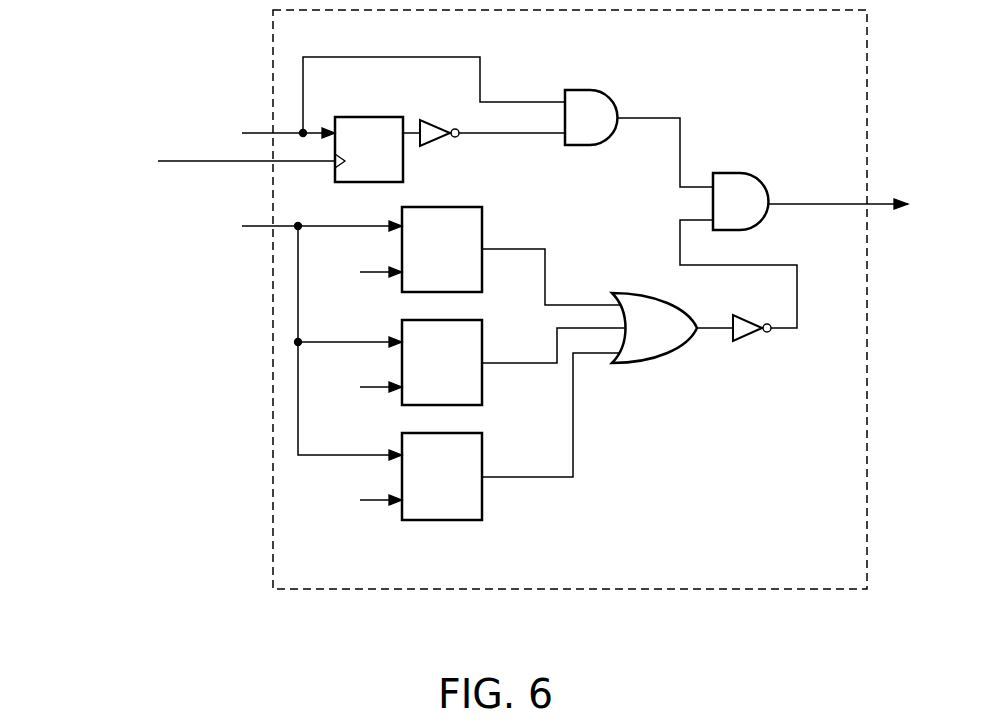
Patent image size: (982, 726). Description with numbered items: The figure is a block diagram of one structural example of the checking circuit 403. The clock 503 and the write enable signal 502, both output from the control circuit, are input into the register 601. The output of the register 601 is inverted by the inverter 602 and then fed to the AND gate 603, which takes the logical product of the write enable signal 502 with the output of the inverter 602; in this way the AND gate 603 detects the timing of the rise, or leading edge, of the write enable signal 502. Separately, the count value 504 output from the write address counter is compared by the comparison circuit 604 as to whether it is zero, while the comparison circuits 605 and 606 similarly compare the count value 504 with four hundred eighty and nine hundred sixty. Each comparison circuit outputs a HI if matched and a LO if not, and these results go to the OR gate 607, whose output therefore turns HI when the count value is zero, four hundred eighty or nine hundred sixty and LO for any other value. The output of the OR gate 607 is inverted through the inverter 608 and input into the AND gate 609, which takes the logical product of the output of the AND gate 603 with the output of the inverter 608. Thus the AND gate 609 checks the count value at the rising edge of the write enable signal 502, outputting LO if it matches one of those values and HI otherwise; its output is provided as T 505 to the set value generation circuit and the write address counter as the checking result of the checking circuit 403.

The checking circuit 403 is at (570, 299).
The write enable signal 502 is at (298, 101).
The clock 503 is at (183, 160).
The count value 504 is at (217, 336).
The T 505 is at (815, 204).
The register 601 is at (350, 117).
The inverter 602 is at (425, 117).
The AND gate 603 is at (585, 90).
The comparison circuit 604 is at (465, 207).
The comparison circuit 605 is at (482, 392).
The comparison circuit 606 is at (482, 497).
The OR gate 607 is at (644, 364).
The inverter 608 is at (741, 343).
The AND gate 609 is at (733, 173).